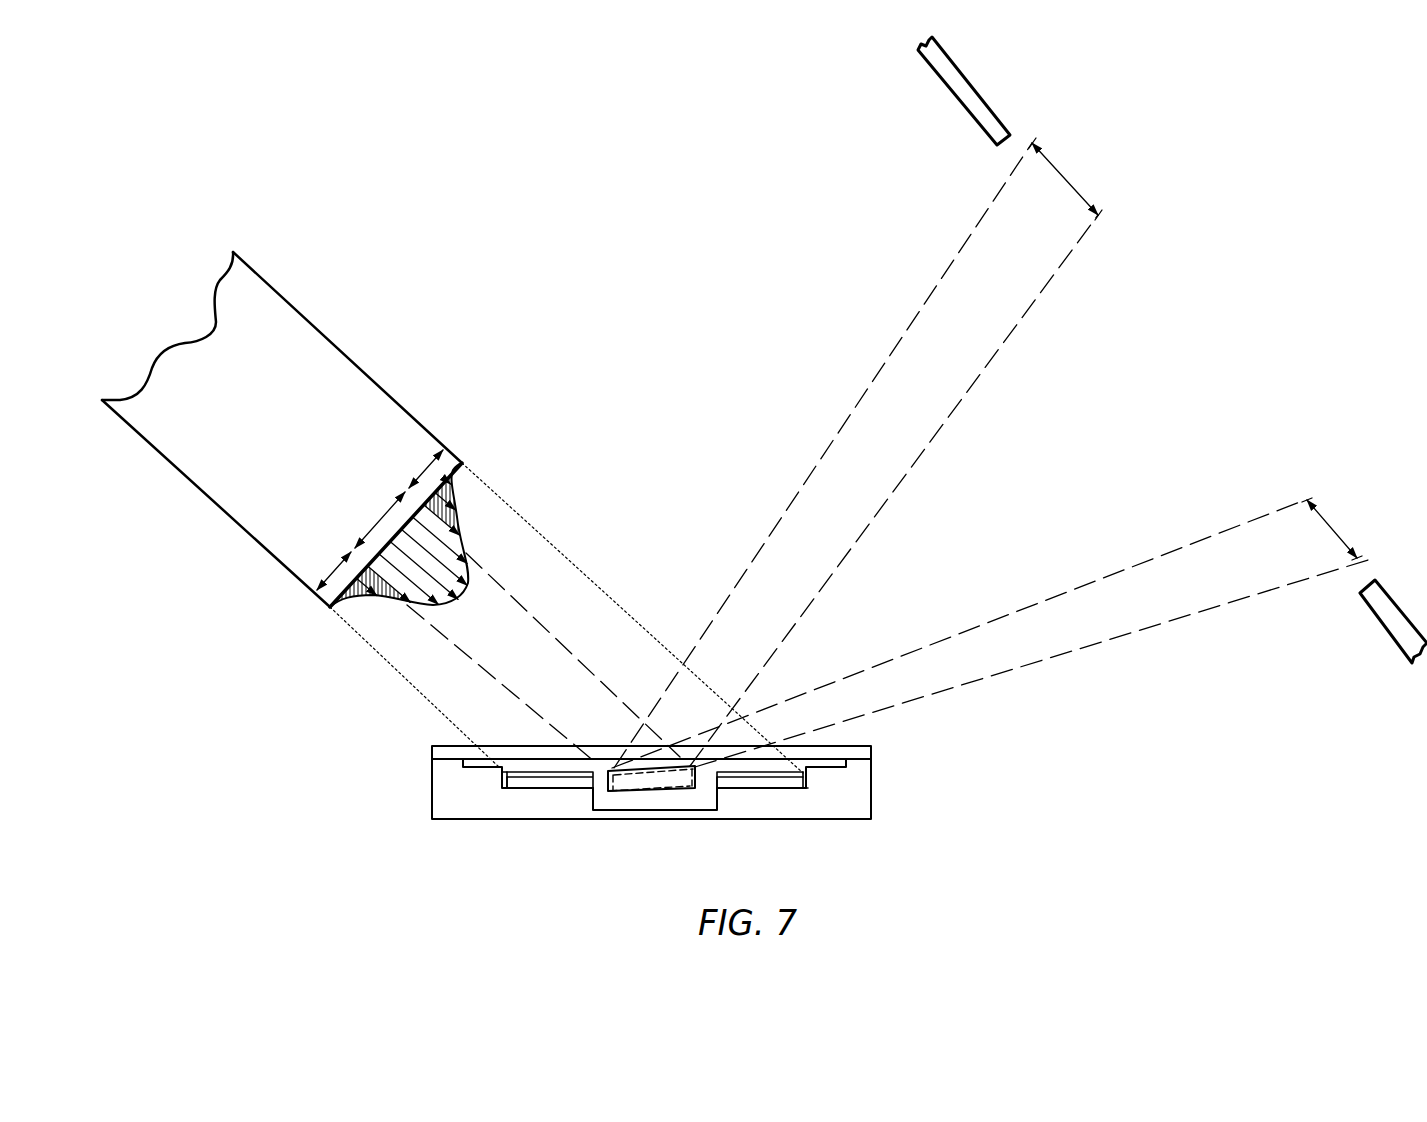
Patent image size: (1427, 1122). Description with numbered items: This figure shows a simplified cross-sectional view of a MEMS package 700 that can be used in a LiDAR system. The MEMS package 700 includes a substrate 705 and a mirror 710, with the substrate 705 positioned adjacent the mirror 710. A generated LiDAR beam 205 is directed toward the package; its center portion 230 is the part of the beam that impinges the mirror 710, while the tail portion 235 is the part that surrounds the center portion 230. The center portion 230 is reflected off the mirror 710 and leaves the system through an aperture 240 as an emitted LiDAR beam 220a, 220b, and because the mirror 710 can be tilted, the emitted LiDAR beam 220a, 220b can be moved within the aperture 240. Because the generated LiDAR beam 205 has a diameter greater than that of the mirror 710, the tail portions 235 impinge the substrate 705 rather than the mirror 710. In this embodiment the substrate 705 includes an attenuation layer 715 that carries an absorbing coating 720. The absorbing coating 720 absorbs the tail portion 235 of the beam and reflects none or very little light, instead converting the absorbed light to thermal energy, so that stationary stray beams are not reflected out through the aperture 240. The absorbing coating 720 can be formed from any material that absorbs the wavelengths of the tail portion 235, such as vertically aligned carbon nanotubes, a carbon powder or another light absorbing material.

The generated LiDAR beam 205 is at (272, 398).
The center portion 230 is at (391, 507).
The tail portion 235 is at (433, 455).
The aperture 240 is at (1010, 145).
The emitted LiDAR beam 220a is at (1060, 172).
The emitted LiDAR beam 220b is at (1332, 523).
The MEMS package 700 is at (416, 723).
The substrate 705 is at (549, 780).
The mirror 710 is at (647, 779).
The attenuation layer 715 is at (570, 777).
The absorbing coating 720 is at (513, 789).